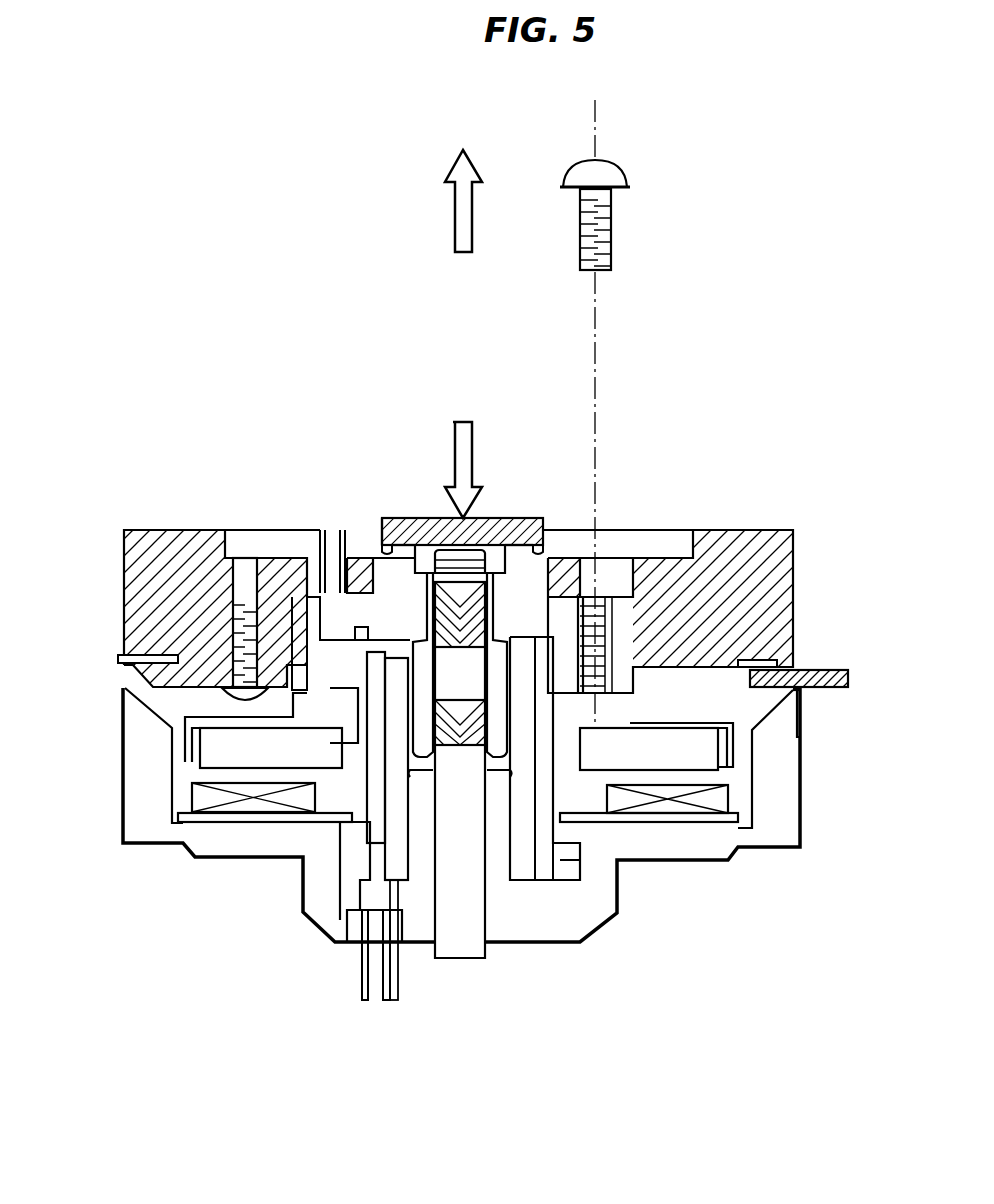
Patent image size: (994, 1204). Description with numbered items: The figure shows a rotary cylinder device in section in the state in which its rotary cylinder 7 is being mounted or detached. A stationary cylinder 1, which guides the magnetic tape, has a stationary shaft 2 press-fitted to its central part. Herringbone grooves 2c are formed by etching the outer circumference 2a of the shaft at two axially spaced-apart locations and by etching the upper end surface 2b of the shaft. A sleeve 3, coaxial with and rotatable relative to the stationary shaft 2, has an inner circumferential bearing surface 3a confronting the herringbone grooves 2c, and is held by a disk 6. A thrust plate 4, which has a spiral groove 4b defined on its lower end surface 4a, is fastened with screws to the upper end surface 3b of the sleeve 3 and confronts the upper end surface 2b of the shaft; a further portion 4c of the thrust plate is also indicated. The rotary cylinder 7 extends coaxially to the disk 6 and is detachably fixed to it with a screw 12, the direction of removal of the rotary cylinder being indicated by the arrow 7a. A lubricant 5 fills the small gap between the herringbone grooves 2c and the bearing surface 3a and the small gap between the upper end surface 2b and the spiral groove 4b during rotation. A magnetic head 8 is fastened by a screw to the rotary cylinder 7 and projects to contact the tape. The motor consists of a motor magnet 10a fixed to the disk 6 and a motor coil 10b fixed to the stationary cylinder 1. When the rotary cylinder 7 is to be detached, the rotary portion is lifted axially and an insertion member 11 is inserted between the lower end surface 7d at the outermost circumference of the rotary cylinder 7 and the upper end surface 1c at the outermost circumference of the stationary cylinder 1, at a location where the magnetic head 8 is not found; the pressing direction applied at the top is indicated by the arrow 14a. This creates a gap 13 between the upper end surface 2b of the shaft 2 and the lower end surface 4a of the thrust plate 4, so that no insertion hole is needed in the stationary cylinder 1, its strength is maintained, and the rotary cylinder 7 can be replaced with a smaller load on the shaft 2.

The stationary cylinder 1 is at (130, 822).
The upper end surface of the stationary cylinder 1c is at (798, 700).
The stationary shaft 2 is at (445, 948).
The outer circumference of the shaft 2a is at (430, 548).
The upper end surface of the shaft 2b is at (450, 552).
The herringbone grooves 2c is at (472, 640).
The sleeve 3 is at (500, 620).
The inner circumferential bearing surface 3a is at (490, 600).
The upper end surface of the sleeve 3b is at (380, 558).
The thrust plate 4 is at (540, 522).
The lower end surface of the thrust plate 4a is at (492, 540).
The spiral groove 4b is at (512, 545).
The cap plate portion 4c is at (482, 528).
The lubricant 5 is at (350, 640).
The disk 6 is at (395, 660).
The rotary cylinder 7 is at (128, 568).
The cover direction arrow 7a is at (463, 183).
The lower end surface of the rotary cylinder 7d is at (788, 660).
The magnetic head 8 is at (125, 658).
The motor magnet 10a is at (670, 745).
The motor coil 10b is at (668, 800).
The insertion member 11 is at (848, 680).
The screw 12 is at (612, 215).
The gap 13 is at (430, 575).
The pressing direction arrow 14a is at (464, 449).